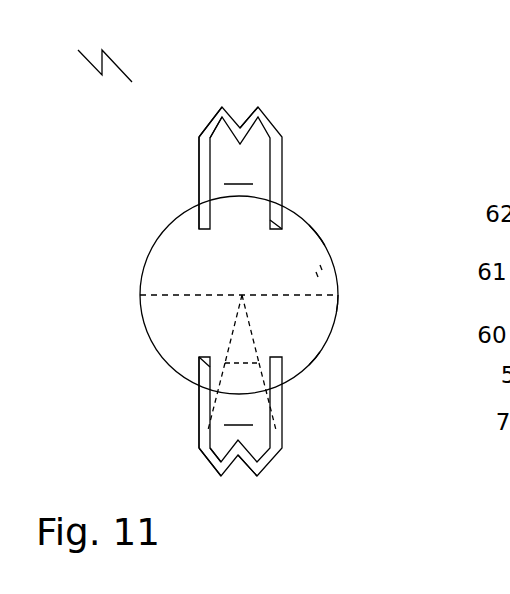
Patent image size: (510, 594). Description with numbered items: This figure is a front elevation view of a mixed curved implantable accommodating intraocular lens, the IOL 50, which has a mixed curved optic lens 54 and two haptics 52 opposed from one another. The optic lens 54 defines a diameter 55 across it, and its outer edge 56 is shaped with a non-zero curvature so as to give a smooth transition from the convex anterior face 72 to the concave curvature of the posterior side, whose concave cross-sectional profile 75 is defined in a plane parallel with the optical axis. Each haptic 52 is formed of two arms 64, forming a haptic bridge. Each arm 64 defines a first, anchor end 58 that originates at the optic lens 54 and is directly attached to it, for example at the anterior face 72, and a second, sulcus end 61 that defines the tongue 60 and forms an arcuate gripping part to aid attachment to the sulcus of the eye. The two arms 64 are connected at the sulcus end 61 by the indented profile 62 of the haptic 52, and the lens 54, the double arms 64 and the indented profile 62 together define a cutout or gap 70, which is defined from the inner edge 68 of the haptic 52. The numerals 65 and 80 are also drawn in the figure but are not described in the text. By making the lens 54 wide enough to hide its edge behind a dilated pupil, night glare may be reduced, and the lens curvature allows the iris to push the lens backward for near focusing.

The implantable accommodating intraocular lens 50 is at (88, 48).
The haptic 52 is at (282, 175).
The optic lens 54 is at (320, 235).
The diameter 55 is at (308, 297).
The outer edge 56 is at (315, 360).
The anchor end 58 is at (282, 220).
The tongue 60 is at (275, 125).
The sulcus end 61 is at (217, 110).
The indented profile 62 is at (251, 112).
The arm 64 is at (199, 172).
The internal channel 65 is at (228, 358).
The inner edge 68 is at (208, 135).
The gap 70 is at (237, 291).
The anterior face 72 is at (316, 272).
The concave cross-sectional profile 75 is at (322, 265).
The center line 80 is at (140, 294).